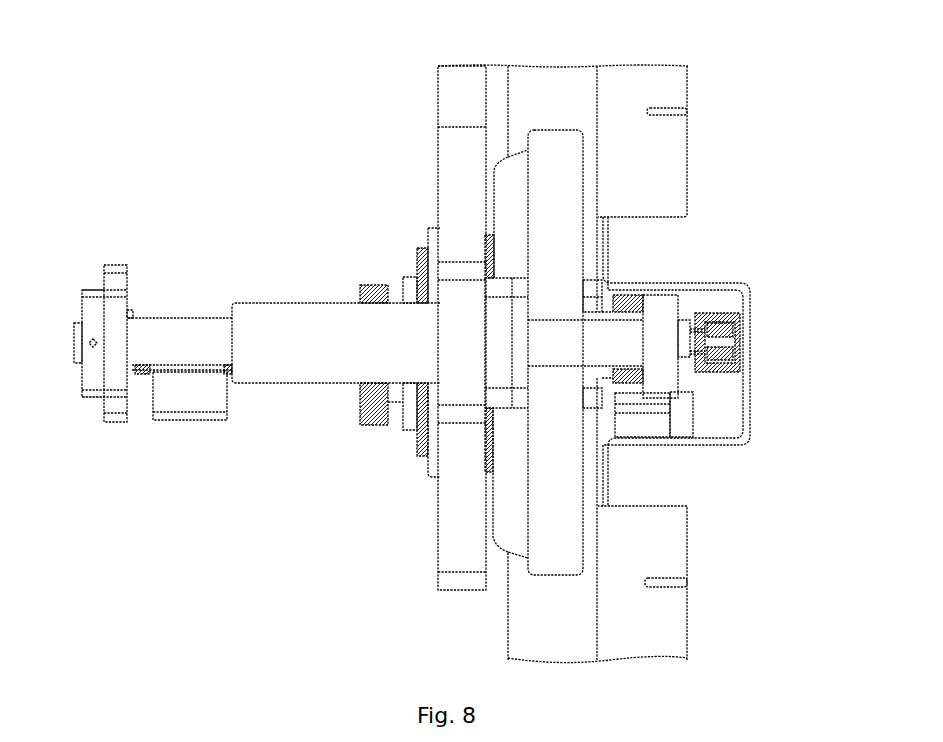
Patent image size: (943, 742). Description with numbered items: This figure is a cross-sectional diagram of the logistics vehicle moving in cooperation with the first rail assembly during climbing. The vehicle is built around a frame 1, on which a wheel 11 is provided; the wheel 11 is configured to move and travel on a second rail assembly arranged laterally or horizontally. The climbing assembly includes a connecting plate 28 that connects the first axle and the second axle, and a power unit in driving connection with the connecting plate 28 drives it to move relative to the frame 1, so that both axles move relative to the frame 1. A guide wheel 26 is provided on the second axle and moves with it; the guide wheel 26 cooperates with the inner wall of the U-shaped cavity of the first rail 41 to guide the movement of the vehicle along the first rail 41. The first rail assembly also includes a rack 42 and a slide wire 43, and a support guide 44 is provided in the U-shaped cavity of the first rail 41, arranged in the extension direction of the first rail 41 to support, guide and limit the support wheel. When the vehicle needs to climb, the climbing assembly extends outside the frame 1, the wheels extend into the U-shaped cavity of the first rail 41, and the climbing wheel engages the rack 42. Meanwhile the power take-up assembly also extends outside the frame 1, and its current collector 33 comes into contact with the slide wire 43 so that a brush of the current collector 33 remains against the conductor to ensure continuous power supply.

The frame 1 is at (462, 87).
The wheel 11 is at (563, 483).
The connecting plate 28 is at (117, 385).
The guide wheel 26 is at (658, 327).
The current collector 33 is at (715, 317).
The slide wire 43 is at (733, 350).
The first rail 41 is at (753, 400).
The support guide 44 is at (677, 408).
The rack 42 is at (645, 422).